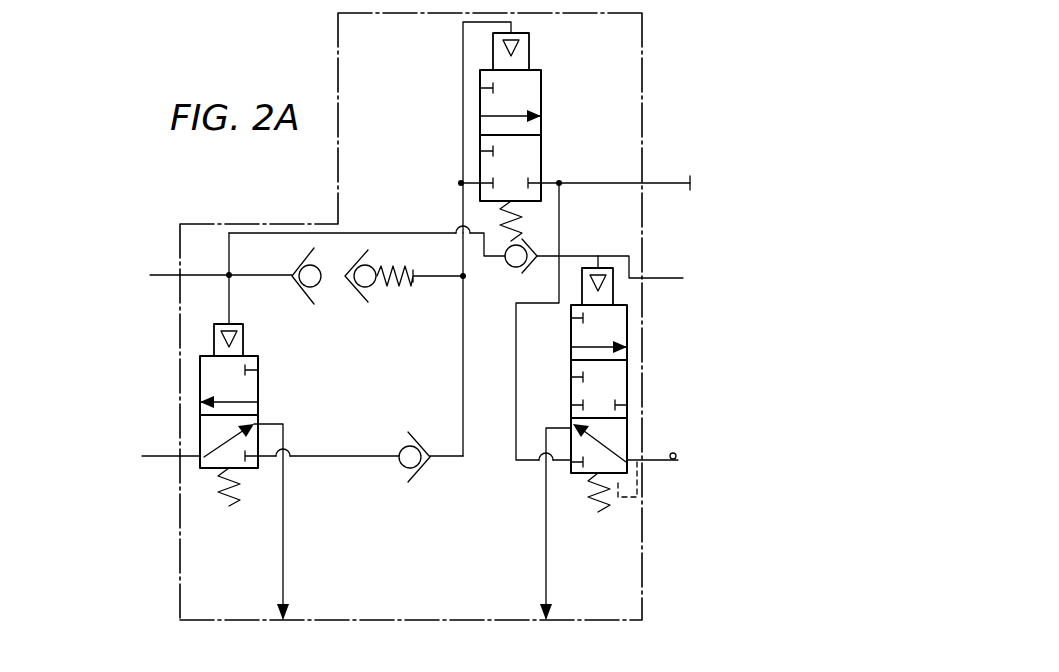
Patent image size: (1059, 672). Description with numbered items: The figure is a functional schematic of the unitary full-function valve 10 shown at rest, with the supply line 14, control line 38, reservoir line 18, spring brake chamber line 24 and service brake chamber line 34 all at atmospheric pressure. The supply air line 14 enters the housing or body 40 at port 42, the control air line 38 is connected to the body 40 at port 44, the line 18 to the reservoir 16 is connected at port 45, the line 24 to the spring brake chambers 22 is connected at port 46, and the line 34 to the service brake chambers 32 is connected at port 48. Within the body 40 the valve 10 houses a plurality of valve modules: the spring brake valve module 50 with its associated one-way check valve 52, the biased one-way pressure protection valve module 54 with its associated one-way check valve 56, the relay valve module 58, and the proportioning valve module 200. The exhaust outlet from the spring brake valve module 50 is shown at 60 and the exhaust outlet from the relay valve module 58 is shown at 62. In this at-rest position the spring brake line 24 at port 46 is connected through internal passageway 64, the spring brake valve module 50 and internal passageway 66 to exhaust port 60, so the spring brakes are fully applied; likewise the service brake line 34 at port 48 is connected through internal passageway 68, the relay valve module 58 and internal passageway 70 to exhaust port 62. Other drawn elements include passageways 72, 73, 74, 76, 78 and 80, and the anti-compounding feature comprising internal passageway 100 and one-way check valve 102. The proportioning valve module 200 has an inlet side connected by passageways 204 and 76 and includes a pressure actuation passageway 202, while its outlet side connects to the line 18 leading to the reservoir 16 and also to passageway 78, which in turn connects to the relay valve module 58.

The unitary full-function valve 10 is at (648, 112).
The supply air line 14 is at (150, 273).
The reservoir 16 is at (754, 172).
The reservoir line 18 is at (595, 181).
The spring brake chambers 22 is at (81, 472).
The spring brake chamber line 24 is at (142, 452).
The service brake chambers 32 is at (747, 476).
The service brake chamber line 34 is at (670, 463).
The control air line 38 is at (683, 278).
The housing or body 40 is at (300, 223).
The port 42 is at (175, 282).
The port 44 is at (655, 282).
The port 45 is at (652, 182).
The port 46 is at (175, 456).
The port 48 is at (650, 463).
The spring brake valve module 50 is at (258, 390).
The one-way check valve 52 is at (423, 477).
The biased one-way pressure protection valve module 54 is at (357, 290).
The one-way check valve 56 is at (302, 297).
The relay valve module 58 is at (571, 337).
The exhaust outlet 60 is at (290, 613).
The exhaust outlet 62 is at (543, 622).
The internal passageway 64 is at (192, 454).
The internal passageway 66 is at (284, 538).
The internal passageway 68 is at (629, 460).
The internal passageway 70 is at (545, 532).
The passageway 72 is at (266, 270).
The connecting passage 73 is at (325, 459).
The passageway 74 is at (462, 333).
The passageway 76 is at (458, 252).
The passageway 78 is at (517, 398).
The passageway 80 is at (610, 253).
The internal passageway 100 is at (410, 232).
The one-way check valve 102 is at (512, 277).
The proportioning valve module 200 is at (543, 88).
The pressure actuation passageway 202 is at (460, 33).
The passageway 204 is at (470, 180).